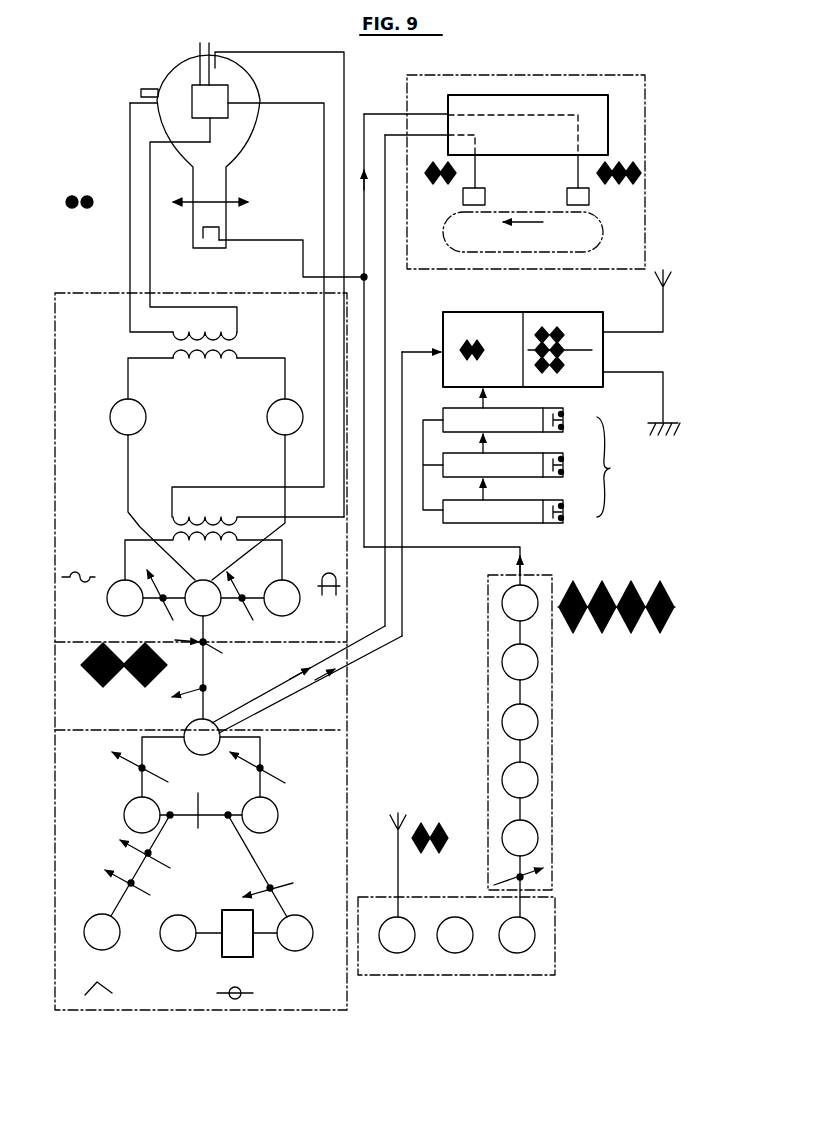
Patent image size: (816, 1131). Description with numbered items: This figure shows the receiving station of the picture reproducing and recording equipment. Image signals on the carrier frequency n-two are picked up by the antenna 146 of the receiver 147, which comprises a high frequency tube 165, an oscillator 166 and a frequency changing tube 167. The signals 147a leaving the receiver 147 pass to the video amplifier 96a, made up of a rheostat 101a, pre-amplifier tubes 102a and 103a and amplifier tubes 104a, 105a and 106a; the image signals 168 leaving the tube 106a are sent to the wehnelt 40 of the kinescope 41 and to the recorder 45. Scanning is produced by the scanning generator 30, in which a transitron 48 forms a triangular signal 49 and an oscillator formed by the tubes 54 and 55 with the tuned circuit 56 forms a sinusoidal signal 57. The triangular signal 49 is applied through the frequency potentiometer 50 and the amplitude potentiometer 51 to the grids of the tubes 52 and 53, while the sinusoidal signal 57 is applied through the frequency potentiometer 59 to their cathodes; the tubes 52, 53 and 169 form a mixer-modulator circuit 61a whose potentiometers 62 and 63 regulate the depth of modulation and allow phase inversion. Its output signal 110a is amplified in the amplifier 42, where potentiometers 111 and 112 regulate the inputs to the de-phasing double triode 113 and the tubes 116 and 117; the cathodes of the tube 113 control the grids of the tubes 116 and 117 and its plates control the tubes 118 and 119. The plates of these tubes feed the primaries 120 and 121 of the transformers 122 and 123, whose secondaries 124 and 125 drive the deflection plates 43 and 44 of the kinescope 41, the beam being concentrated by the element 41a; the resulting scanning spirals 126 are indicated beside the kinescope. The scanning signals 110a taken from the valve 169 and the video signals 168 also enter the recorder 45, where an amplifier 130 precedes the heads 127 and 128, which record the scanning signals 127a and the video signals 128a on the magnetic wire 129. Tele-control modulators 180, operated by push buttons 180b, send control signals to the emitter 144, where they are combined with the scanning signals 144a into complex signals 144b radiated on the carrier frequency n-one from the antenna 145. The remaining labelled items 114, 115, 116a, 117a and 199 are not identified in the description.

The scanning signal generator 30 is at (165, 992).
The wehnelt 40 is at (220, 230).
The kinescope 41 is at (167, 83).
The beam-concentrating element 41a is at (217, 200).
The scanning signal amplifier 42 is at (330, 692).
The deflection plate 43 is at (192, 97).
The deflection plate 44 is at (275, 162).
The recorder 45 is at (592, 83).
The transitron 48 is at (102, 938).
The triangular signal 49 is at (87, 990).
The frequency potentiometer 50 is at (125, 883).
The amplitude potentiometer 51 is at (155, 872).
The tube 52 is at (138, 812).
The tube 53 is at (263, 813).
The oscillator tube 54 is at (298, 942).
The oscillator tube 55 is at (178, 937).
The tuned circuit 56 is at (228, 927).
The sinusoidal signal 57 is at (237, 999).
The frequency potentiometer 59 is at (272, 885).
The mixer-modulator circuit 61a is at (201, 826).
The potentiometer 62 is at (262, 768).
The potentiometer 63 is at (140, 768).
The video amplifier 96a is at (500, 712).
The rheostat 101a is at (527, 880).
The pre-amplifier tube 102a is at (525, 835).
The pre-amplifier tube 103a is at (523, 775).
The amplifier tube 104a is at (520, 720).
The amplifier tube 105a is at (523, 660).
The amplifier tube 106a is at (506, 606).
The scanning signal 110a is at (97, 678).
The potentiometer 111 is at (205, 688).
The potentiometer 112 is at (206, 642).
The double triode de-phasing valve 113 is at (160, 560).
The switch 114 is at (162, 602).
The switch 115 is at (243, 596).
The amplifier tube 116 is at (115, 603).
The signal 116a is at (75, 572).
The amplifier tube 117 is at (286, 590).
The signal 117a is at (327, 597).
The amplifier tube 118 is at (125, 417).
The amplifier tube 119 is at (273, 417).
The primary 120 is at (203, 530).
The primary 121 is at (212, 362).
The transformer 122 is at (128, 508).
The transformer 123 is at (235, 341).
The secondary 124 is at (185, 513).
The secondary 125 is at (202, 332).
The scanning spirals 126 is at (75, 195).
The recording and reproducing head 127 is at (463, 197).
The scanning signals 127a is at (457, 175).
The recording and reproducing head 128 is at (590, 198).
The video signals 128a is at (617, 162).
The magnetic wire 129 is at (603, 232).
The amplifier 130 is at (518, 115).
The emitter 144 is at (525, 310).
The scanning signals 144a is at (462, 348).
The complex signals 144b is at (563, 342).
The antenna 145 is at (658, 353).
The antenna 146 is at (397, 830).
The receiver 147 is at (548, 943).
The receiver output signals 147a is at (427, 822).
The high frequency tube 165 is at (398, 947).
The oscillator 166 is at (457, 943).
The frequency changing tube 167 is at (517, 945).
The image signals 168 is at (635, 583).
The valve 169 is at (197, 737).
The control modulators 180 is at (462, 417).
The push buttons 180b is at (585, 470).
The control circuit 199 is at (93, 310).